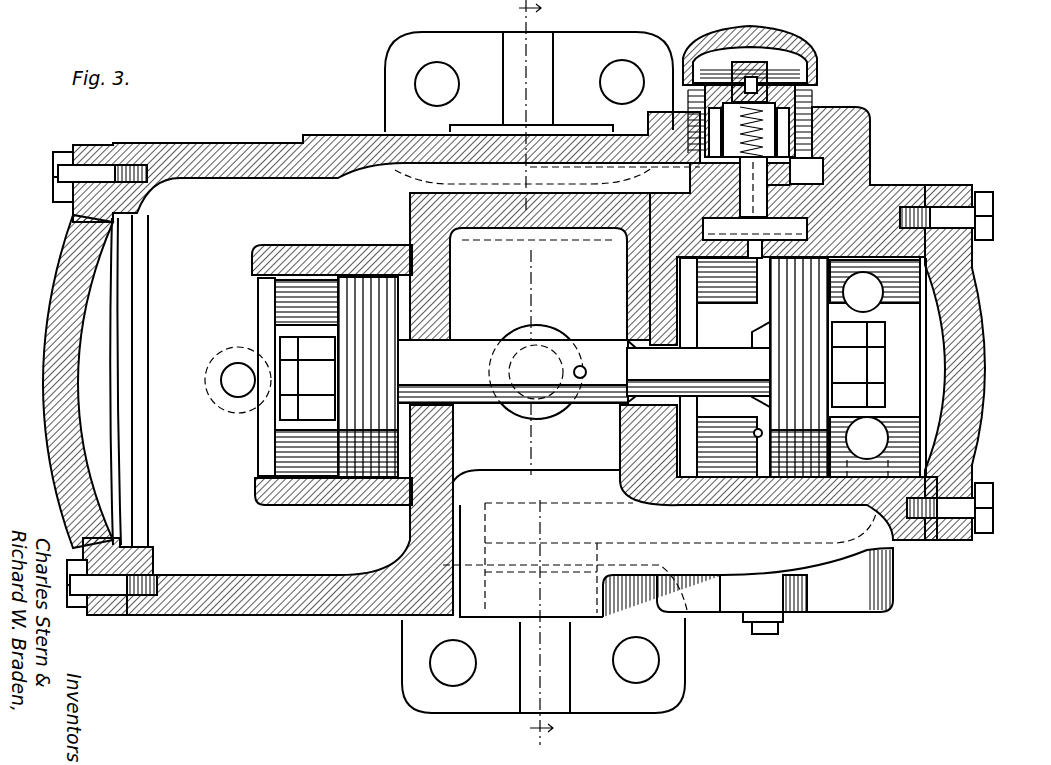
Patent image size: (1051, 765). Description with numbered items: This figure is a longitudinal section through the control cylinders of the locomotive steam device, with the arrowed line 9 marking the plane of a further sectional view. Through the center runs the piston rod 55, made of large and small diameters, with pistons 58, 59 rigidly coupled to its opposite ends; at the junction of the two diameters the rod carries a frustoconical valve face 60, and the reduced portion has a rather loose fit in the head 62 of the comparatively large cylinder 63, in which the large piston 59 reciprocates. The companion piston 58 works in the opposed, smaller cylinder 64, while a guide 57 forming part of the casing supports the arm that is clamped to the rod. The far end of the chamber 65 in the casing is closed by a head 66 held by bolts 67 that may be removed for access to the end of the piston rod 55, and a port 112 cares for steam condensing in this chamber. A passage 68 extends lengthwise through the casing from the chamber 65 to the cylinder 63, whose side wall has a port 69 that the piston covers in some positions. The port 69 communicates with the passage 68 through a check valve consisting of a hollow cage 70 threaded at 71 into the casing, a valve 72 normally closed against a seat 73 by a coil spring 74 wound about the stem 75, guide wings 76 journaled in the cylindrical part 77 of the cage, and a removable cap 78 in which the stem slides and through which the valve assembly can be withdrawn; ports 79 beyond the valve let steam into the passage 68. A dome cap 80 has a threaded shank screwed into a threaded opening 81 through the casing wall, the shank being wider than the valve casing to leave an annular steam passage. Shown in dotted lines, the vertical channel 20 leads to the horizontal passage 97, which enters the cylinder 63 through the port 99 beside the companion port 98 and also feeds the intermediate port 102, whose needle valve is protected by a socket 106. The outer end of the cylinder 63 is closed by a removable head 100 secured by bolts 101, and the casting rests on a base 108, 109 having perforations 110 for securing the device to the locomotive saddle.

The section line 9- 9 is at (540, 375).
The channel 20 is at (537, 506).
The piston rod 55 is at (475, 347).
The guide 57 is at (551, 262).
The piston 58 is at (343, 445).
The piston 59 is at (785, 412).
The frustoconical valve face 60 is at (623, 376).
The head 62 is at (643, 290).
The large cylinder 63 is at (718, 483).
The cylinder 64 is at (312, 510).
The chamber 65 is at (281, 415).
The head 66 is at (60, 337).
The bolts 67 is at (76, 612).
The passage 68 is at (553, 167).
The port 69 is at (752, 263).
The cage 70 is at (860, 133).
The threads 71 is at (793, 207).
The valve 72 is at (823, 115).
The seat 73 is at (718, 168).
The coil spring 74 is at (763, 122).
The stem 75 is at (770, 100).
The guide wings 76 is at (813, 175).
The cylindrical part 77 is at (760, 215).
The removable cap 78 is at (747, 67).
The ports 79 is at (690, 118).
The dome cap 80 is at (720, 40).
The threaded opening 81 is at (812, 125).
The passage 97 is at (672, 540).
The port 98 is at (880, 303).
The port 99 is at (880, 421).
The removable head 100 is at (977, 350).
The bolts 101 is at (982, 222).
The port 102 is at (754, 434).
The socket 106 is at (738, 611).
The base 108 is at (508, 707).
The base 109 is at (478, 40).
The perforations 110 is at (423, 78).
The port 112 is at (223, 367).